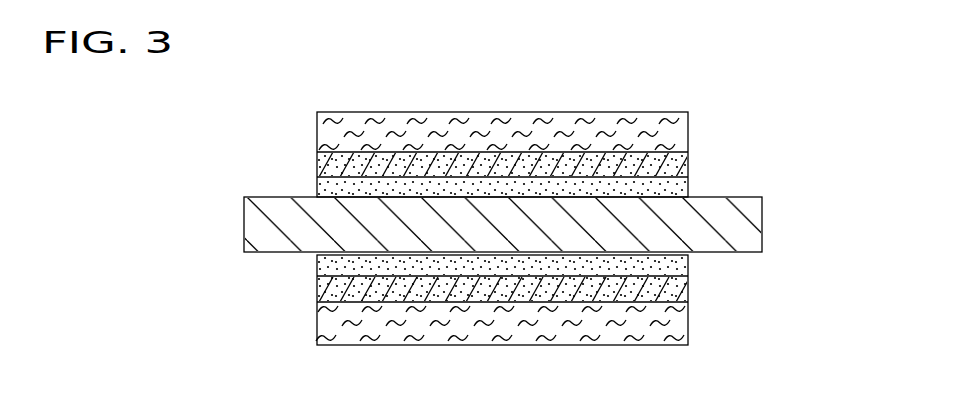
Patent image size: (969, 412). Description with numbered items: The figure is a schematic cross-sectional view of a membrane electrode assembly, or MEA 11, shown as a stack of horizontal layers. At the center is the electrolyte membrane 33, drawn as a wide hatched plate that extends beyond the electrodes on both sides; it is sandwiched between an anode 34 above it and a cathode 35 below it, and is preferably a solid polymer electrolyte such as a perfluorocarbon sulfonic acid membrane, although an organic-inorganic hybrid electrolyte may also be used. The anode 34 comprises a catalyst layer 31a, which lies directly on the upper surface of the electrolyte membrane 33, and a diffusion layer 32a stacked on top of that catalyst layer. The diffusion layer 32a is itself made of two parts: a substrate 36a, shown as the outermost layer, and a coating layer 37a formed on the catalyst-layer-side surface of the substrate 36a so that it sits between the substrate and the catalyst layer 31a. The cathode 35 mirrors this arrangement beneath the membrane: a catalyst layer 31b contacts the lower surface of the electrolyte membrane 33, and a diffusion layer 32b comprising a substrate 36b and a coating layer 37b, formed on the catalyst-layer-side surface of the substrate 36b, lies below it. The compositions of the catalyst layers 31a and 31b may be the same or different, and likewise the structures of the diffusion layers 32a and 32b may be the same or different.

The membrane electrode assembly 11 is at (731, 98).
The electrolyte membrane 33 is at (332, 232).
The anode 34 is at (310, 113).
The cathode 35 is at (305, 255).
The catalyst layer 31a is at (403, 190).
The catalyst layer 31b is at (387, 267).
The coating layer 37a is at (520, 168).
The coating layer 37b is at (453, 288).
The substrate 36a is at (622, 133).
The substrate 36b is at (576, 323).
The diffusion layer 32a is at (697, 112).
The diffusion layer 32b is at (696, 278).